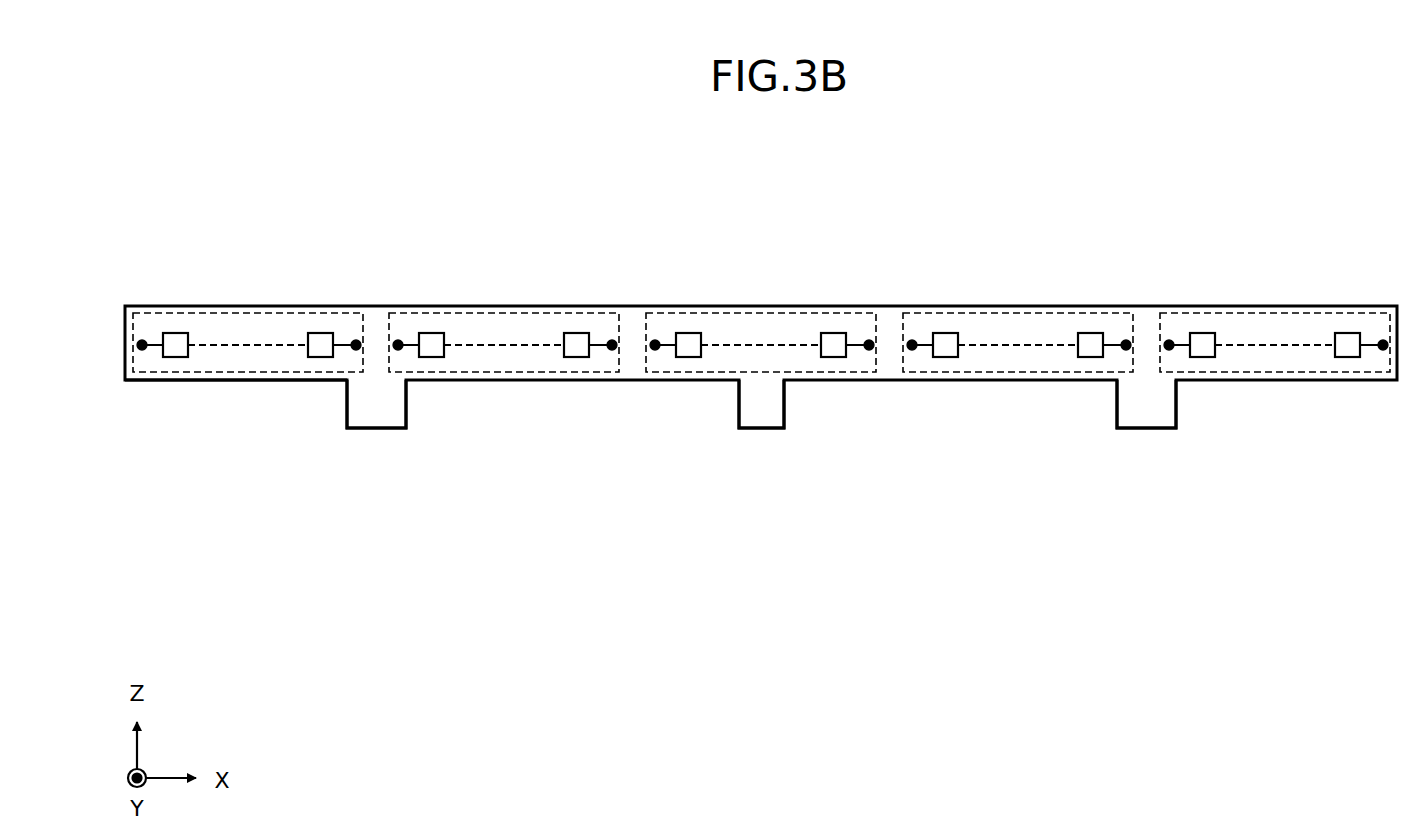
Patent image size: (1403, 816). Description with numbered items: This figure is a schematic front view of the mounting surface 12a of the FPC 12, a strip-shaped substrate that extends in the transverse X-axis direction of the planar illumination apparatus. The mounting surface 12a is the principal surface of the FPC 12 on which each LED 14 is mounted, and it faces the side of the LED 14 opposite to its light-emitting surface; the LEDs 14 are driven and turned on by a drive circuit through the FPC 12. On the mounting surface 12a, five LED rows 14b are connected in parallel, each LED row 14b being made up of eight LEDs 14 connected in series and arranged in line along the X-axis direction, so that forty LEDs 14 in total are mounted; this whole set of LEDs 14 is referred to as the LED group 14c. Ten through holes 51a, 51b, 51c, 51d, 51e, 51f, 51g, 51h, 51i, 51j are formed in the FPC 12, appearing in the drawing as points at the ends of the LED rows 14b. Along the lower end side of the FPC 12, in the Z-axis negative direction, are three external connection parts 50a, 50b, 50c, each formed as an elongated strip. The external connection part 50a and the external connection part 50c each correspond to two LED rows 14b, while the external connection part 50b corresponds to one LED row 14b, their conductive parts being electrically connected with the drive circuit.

The FPC 12 is at (1150, 234).
The mounting surface 12a is at (245, 372).
The LED 14 is at (176, 357).
The LED row 14b is at (257, 331).
The LED group 14c is at (883, 212).
The external connection part 50a is at (1160, 428).
The external connection part 50b is at (767, 428).
The external connection part 50c is at (386, 428).
The through hole 51a is at (1383, 340).
The through hole 51b is at (1169, 340).
The through hole 51c is at (1126, 340).
The through hole 51d is at (912, 340).
The through hole 51e is at (868, 340).
The through hole 51f is at (655, 340).
The through hole 51g is at (612, 340).
The through hole 51h is at (398, 340).
The through hole 51i is at (355, 340).
The through hole 51j is at (142, 340).